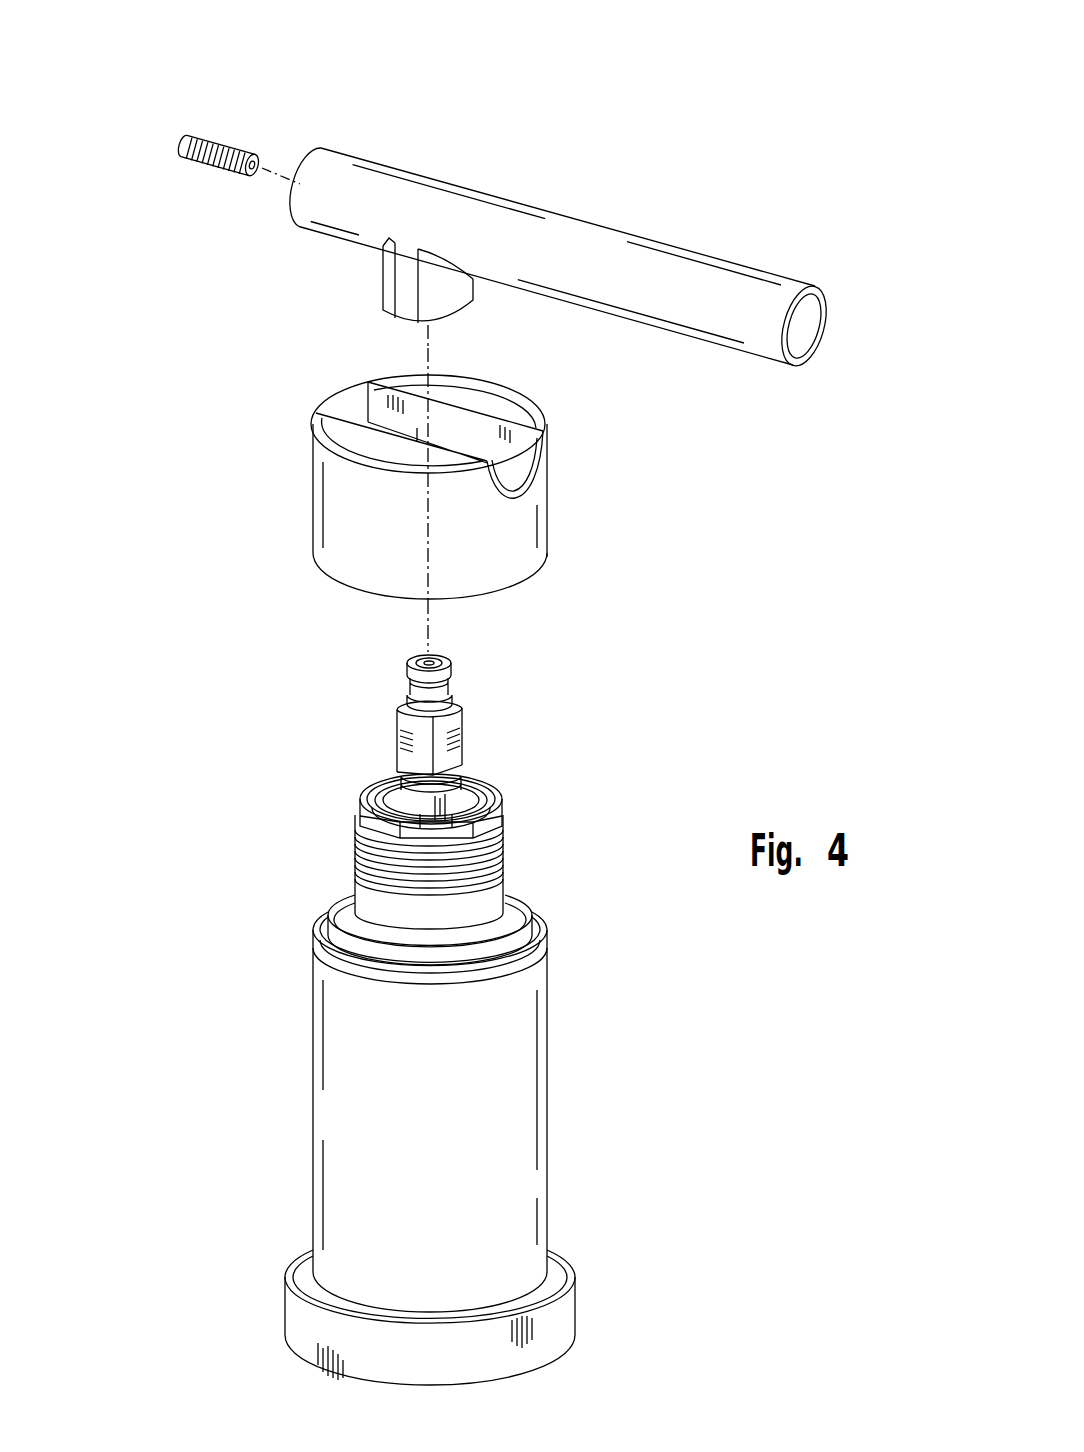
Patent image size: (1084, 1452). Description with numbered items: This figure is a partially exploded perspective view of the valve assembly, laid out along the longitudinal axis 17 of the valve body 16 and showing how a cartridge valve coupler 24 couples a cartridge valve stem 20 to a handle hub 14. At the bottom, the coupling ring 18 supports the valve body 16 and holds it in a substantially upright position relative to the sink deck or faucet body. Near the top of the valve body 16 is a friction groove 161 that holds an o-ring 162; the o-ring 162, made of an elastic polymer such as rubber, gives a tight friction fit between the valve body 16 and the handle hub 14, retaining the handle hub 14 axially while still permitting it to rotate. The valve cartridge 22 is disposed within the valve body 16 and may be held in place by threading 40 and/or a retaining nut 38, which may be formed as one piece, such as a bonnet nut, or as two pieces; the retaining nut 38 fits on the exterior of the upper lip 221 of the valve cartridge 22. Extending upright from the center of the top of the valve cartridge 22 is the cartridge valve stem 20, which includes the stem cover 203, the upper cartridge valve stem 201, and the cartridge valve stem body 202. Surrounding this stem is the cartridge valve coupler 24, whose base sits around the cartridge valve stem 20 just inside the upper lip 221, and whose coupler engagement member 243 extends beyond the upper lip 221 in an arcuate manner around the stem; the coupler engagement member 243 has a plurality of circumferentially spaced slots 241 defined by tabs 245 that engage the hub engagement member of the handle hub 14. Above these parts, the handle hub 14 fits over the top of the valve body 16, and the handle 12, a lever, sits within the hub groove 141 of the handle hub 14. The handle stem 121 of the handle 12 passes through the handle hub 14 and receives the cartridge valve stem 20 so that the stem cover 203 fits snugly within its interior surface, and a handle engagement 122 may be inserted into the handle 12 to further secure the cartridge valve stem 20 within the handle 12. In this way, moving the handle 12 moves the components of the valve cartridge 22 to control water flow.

The handle 12 is at (599, 204).
The handle engagement 122 is at (213, 132).
The handle stem 121 is at (378, 281).
The longitudinal axis 17 is at (430, 348).
The handle hub 14 is at (452, 479).
The hub groove 141 is at (345, 407).
The cartridge valve stem 20 is at (452, 767).
The upper cartridge valve stem 201 is at (461, 676).
The stem cover 203 is at (382, 714).
The cartridge valve stem body 202 is at (384, 767).
The coupler engagement member 243 is at (400, 805).
The cartridge valve coupler 24 is at (485, 775).
The tabs 245 is at (468, 785).
The slots 241 is at (444, 832).
The retaining nut 38 is at (378, 820).
The valve cartridge 22 is at (407, 856).
The upper lip 221 is at (498, 784).
The threading 40 is at (506, 838).
The valve body 16 is at (410, 1103).
The friction groove 161 is at (350, 950).
The o-ring 162 is at (505, 945).
The coupling ring 18 is at (595, 1315).